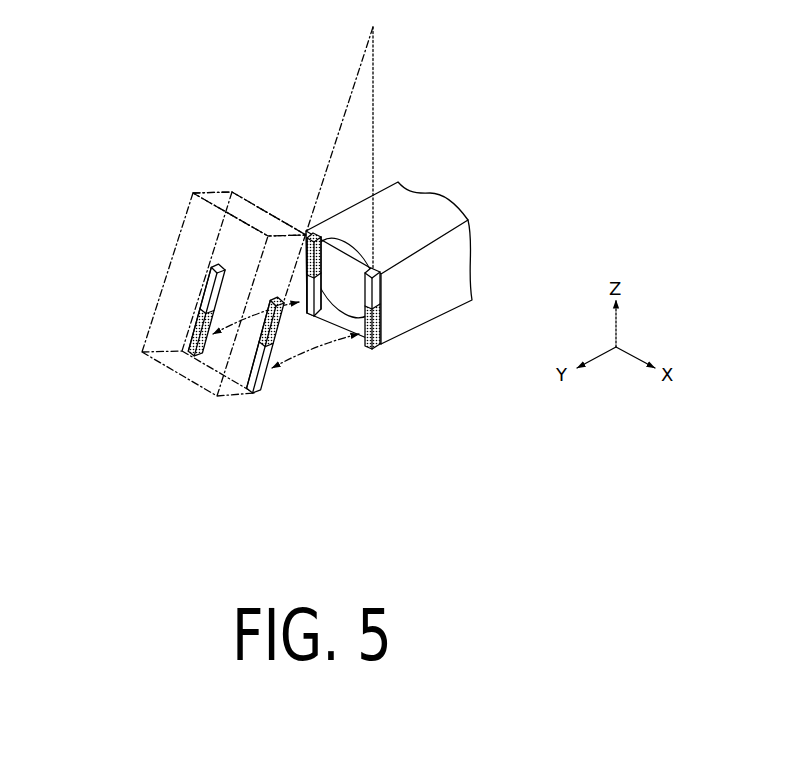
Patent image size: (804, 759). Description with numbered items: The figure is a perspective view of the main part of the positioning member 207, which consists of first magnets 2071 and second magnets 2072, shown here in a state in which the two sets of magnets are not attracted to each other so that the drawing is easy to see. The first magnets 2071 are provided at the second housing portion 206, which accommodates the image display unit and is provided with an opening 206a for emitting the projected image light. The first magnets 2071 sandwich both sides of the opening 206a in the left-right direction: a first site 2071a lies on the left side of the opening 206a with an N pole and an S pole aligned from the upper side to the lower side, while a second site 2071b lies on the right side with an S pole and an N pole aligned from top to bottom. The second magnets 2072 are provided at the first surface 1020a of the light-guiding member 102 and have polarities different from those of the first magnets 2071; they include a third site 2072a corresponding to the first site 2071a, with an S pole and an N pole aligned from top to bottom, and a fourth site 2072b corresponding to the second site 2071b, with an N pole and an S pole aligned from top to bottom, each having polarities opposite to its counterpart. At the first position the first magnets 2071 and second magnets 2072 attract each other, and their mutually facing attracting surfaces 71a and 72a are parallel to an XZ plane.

The light-guiding member 102 is at (170, 273).
The first surface 1020a is at (243, 231).
The attracting surface of second magnets 72a is at (226, 282).
The attracting surface of first magnets 71a is at (326, 268).
The second housing portion 206 is at (419, 265).
The opening 206a is at (361, 281).
The positioning member 207 is at (264, 353).
The first magnets 2071 is at (357, 332).
The first site 2071a is at (369, 357).
The second site 2071b is at (308, 328).
The second magnets 2072 is at (188, 351).
The third site 2072a is at (245, 393).
The fourth site 2072b is at (188, 362).